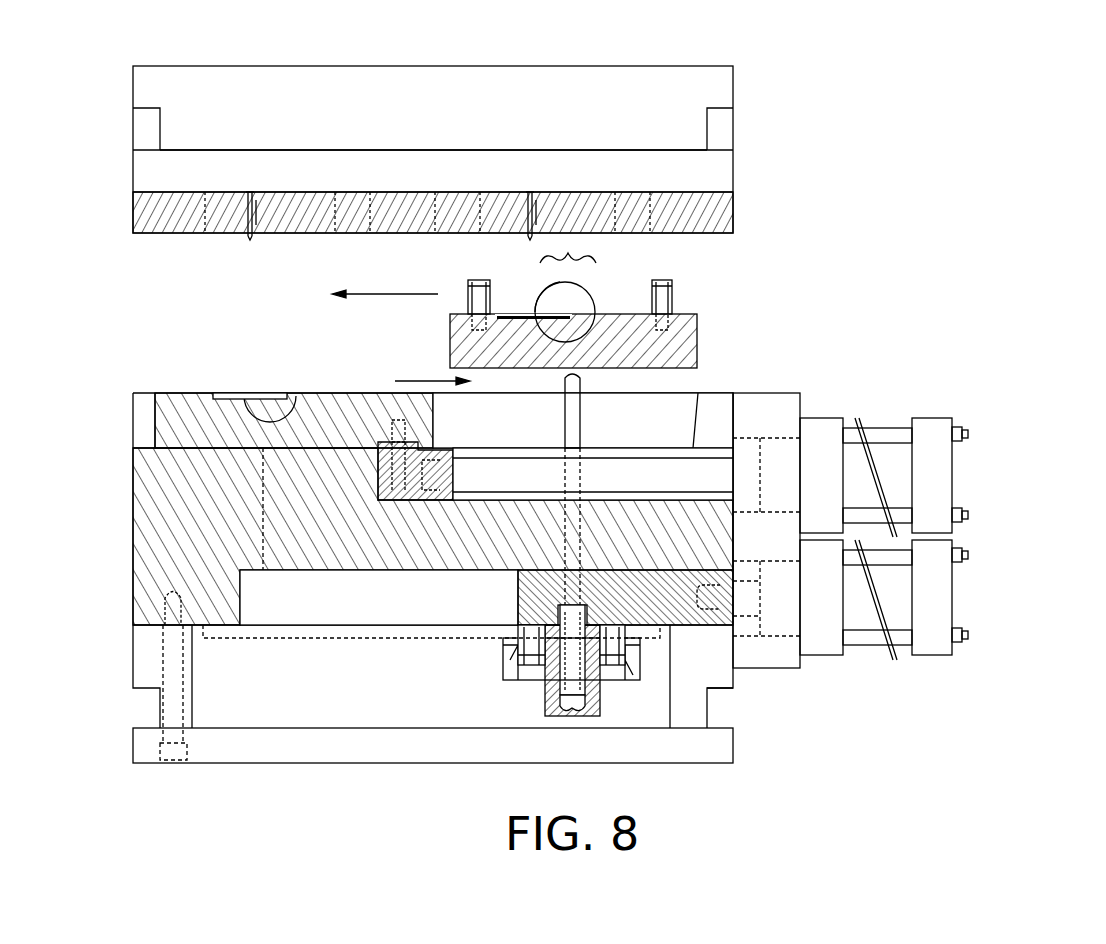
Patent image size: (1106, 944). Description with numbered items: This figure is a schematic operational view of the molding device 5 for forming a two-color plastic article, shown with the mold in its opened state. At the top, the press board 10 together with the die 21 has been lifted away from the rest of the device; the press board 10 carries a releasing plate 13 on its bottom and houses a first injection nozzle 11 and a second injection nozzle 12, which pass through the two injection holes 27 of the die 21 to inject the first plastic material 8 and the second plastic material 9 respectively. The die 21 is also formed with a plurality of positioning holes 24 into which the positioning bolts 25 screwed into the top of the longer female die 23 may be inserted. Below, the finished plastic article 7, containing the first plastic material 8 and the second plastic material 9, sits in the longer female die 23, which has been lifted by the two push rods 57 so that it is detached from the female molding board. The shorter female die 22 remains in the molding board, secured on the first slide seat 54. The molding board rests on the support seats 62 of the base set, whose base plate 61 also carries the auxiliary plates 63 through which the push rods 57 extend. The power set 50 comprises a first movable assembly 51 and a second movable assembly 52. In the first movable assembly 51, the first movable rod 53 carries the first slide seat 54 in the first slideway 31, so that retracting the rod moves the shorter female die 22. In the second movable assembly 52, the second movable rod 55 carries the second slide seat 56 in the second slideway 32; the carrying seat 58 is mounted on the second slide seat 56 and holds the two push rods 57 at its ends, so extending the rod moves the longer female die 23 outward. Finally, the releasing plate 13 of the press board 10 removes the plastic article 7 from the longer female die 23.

The molding device 5 is at (806, 272).
The plastic article 7 is at (568, 247).
The first plastic material 8 is at (297, 398).
The second plastic material 9 is at (547, 287).
The press board 10 is at (133, 93).
The first injection nozzle 11 is at (250, 192).
The second injection nozzle 12 is at (530, 192).
The releasing plate 13 is at (720, 178).
The die 21 is at (152, 218).
The shorter female die 22 is at (160, 432).
The longer female die 23 is at (678, 343).
The positioning holes 24 is at (480, 192).
The positioning bolts 25 is at (665, 300).
The injection holes 27 is at (536, 216).
The first slideway 31 is at (700, 450).
The second slideway 32 is at (290, 600).
The power set 50 is at (933, 539).
The first movable assembly 51 is at (940, 480).
The second movable assembly 52 is at (909, 600).
The first movable rod 53 is at (713, 478).
The first slide seat 54 is at (380, 450).
The second movable rod 55 is at (747, 598).
The second slide seat 56 is at (520, 592).
The push rods 57 is at (575, 430).
The carrying seat 58 is at (510, 672).
The base plate 61 is at (147, 743).
The support seats 62 is at (147, 653).
The auxiliary plates 63 is at (410, 630).